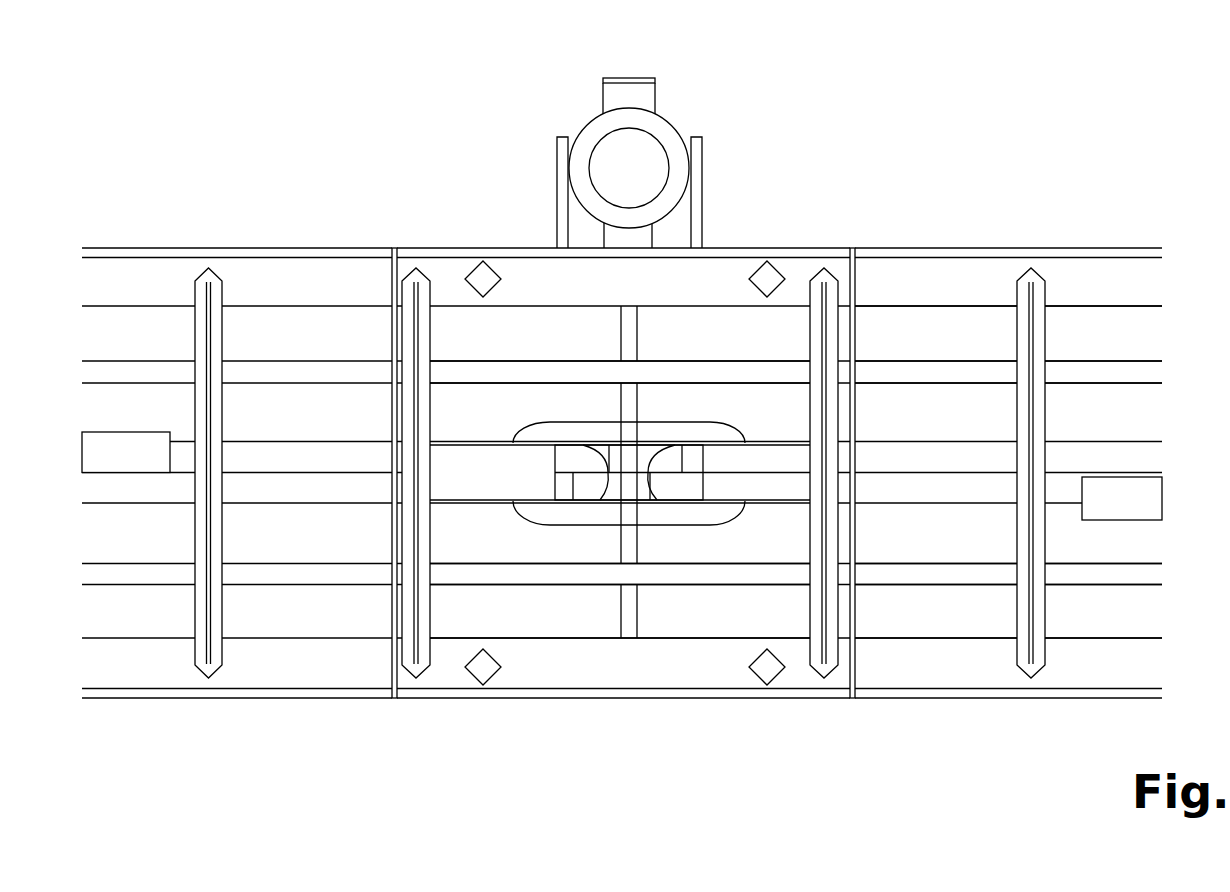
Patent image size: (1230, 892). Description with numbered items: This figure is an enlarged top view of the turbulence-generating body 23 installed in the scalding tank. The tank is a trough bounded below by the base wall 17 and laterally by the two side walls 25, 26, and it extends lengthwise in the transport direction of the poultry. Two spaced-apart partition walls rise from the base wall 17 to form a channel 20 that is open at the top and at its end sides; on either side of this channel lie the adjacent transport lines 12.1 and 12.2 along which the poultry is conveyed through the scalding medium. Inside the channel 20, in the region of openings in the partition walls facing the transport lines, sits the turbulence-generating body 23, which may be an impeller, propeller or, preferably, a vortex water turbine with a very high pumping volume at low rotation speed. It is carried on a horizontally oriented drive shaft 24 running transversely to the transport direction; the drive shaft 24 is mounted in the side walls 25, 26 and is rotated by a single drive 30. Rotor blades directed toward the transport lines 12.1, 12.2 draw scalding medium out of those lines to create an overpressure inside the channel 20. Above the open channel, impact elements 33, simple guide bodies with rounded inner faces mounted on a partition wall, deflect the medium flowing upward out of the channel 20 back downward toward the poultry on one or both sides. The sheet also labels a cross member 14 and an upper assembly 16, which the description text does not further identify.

The transport line 12.1 is at (1129, 426).
The transport line 12.2 is at (1129, 630).
The cross member 14 is at (684, 364).
The mounting bracket 16 is at (659, 163).
The base wall 17 is at (733, 630).
The channel 20 is at (285, 457).
The turbulence-generating body 23 is at (529, 537).
The drive shaft 24 is at (629, 627).
The side wall 25 is at (961, 248).
The side wall 26 is at (708, 699).
The drive 30 is at (603, 163).
The impact element 33 is at (123, 442).